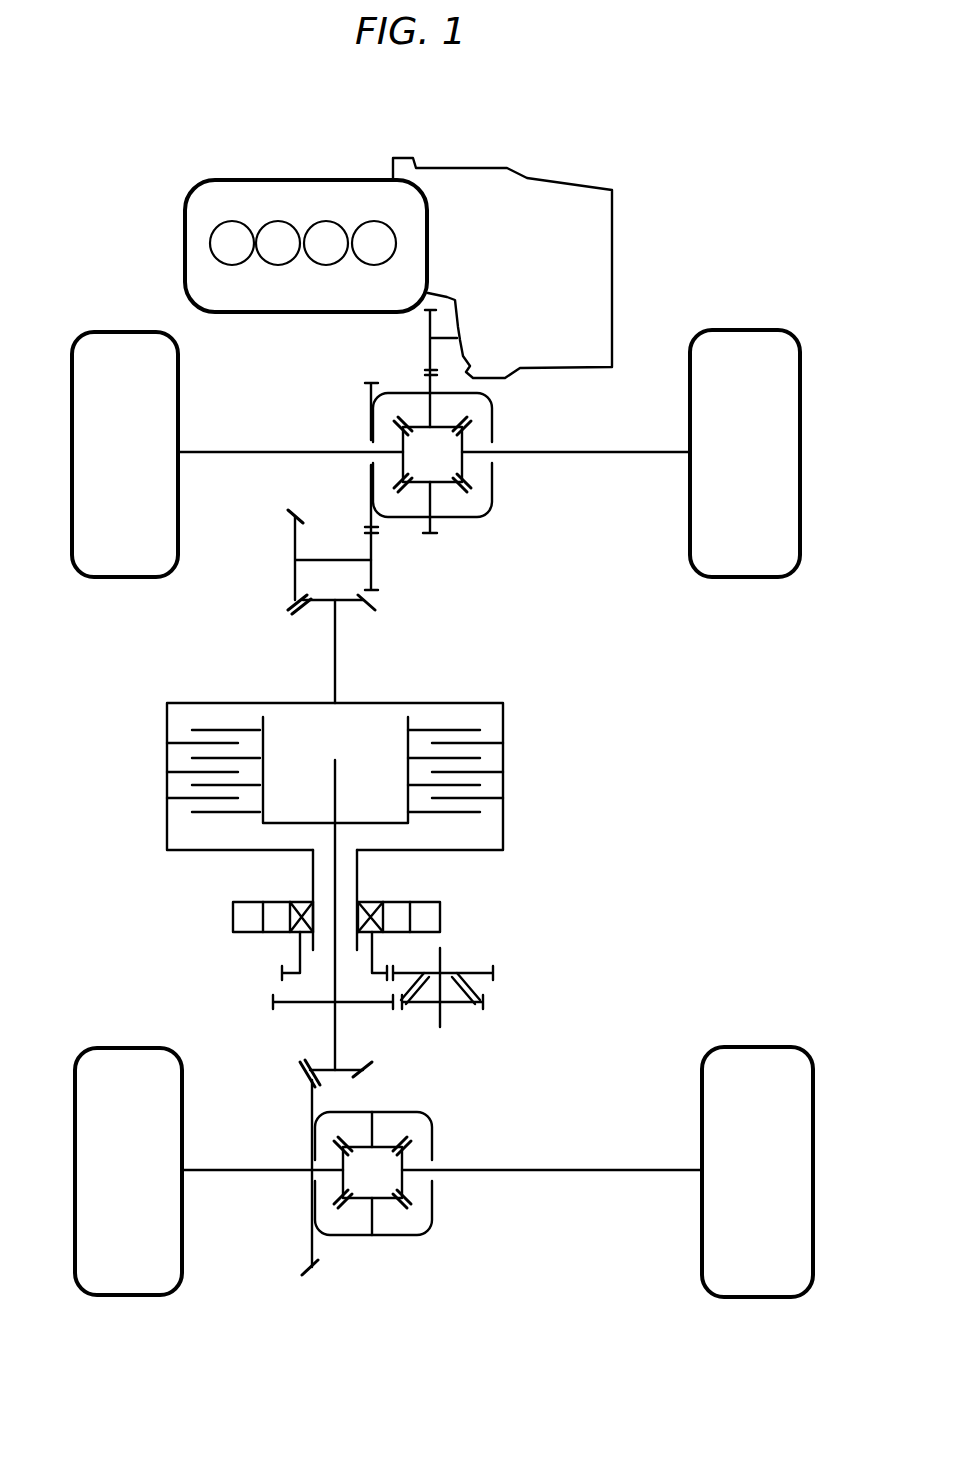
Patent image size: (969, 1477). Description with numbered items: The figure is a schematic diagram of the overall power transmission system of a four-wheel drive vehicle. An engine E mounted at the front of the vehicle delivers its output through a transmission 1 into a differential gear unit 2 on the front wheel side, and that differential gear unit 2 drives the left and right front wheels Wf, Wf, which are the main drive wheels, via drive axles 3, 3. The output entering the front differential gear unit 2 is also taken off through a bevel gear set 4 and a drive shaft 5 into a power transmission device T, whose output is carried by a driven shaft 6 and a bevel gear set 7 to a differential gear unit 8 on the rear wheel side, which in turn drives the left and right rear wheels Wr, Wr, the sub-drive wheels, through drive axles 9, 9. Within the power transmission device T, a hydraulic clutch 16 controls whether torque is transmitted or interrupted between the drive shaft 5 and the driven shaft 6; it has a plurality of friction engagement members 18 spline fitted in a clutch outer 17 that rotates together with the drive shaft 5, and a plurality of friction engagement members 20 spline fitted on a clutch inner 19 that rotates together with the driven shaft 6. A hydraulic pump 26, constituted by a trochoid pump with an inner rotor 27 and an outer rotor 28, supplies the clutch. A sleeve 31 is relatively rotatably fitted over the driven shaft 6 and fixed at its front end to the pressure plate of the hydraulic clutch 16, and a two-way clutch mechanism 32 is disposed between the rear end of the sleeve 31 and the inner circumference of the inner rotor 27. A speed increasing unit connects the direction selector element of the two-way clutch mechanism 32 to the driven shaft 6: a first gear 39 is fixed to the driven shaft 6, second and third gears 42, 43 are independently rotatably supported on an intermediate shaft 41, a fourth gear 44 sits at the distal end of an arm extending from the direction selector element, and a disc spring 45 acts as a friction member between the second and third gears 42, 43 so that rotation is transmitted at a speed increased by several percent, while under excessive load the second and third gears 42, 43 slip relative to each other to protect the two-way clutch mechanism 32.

The engine E is at (288, 185).
The transmission 1 is at (603, 282).
The differential gear unit 2 is at (497, 430).
The drive axles 3 is at (253, 450).
The bevel gear set 4 is at (276, 624).
The drive shaft 5 is at (335, 660).
The front wheels Wf is at (125, 340).
The rear wheels Wr is at (128, 1058).
The power transmission device T is at (347, 842).
The hydraulic clutch 16 is at (347, 873).
The clutch outer 17 is at (458, 702).
The friction engagement members 18 is at (487, 770).
The clutch inner 19 is at (264, 740).
The friction engagement members 20 is at (417, 780).
The hydraulic pump 26 is at (419, 907).
The inner rotor 27 is at (397, 917).
The outer rotor 28 is at (427, 918).
The sleeve 31 is at (362, 872).
The two-way clutch mechanism 32 is at (291, 889).
The first gear 39 is at (273, 1002).
The intermediate shaft 41 is at (440, 1013).
The second gear 42 is at (487, 1002).
The third gear 43 is at (493, 973).
The fourth gear 44 is at (282, 973).
The disc spring 45 is at (527, 1008).
The driven shaft 6 is at (337, 1030).
The bevel gear set 7 is at (294, 1077).
The differential gear unit 8 is at (440, 1150).
The drive axles 9 is at (213, 1170).